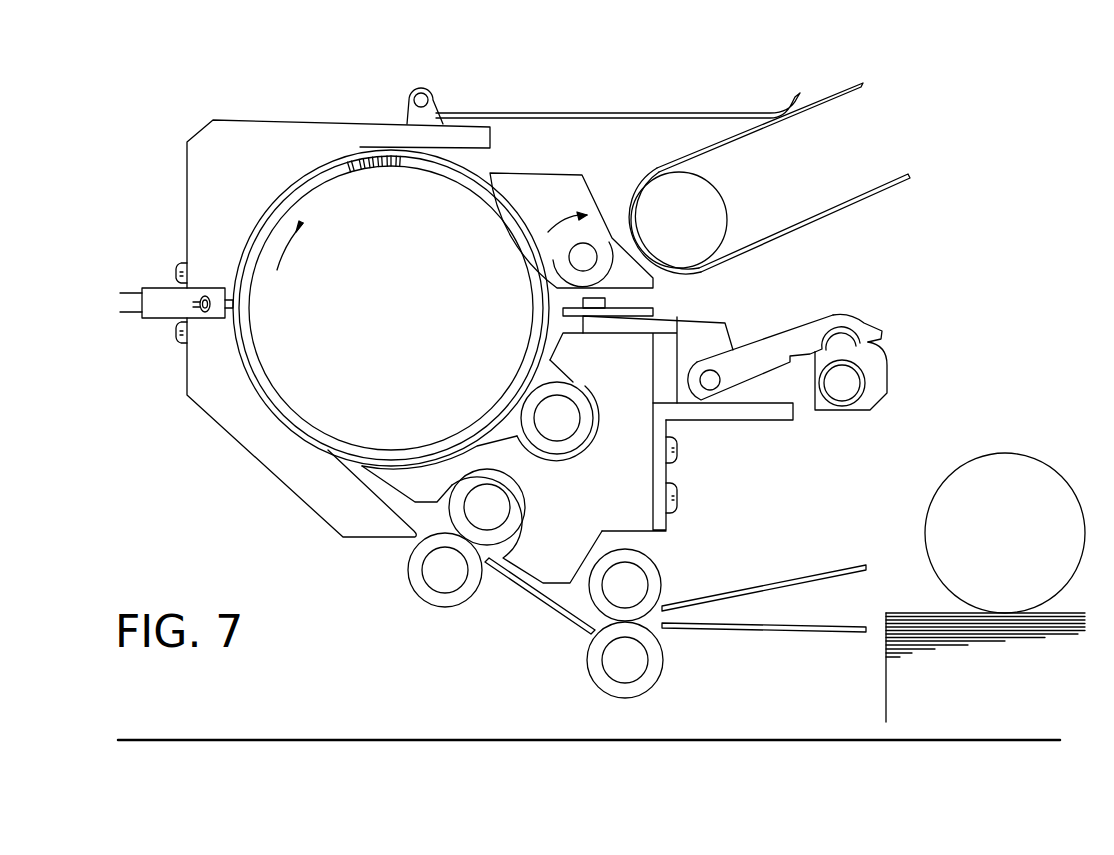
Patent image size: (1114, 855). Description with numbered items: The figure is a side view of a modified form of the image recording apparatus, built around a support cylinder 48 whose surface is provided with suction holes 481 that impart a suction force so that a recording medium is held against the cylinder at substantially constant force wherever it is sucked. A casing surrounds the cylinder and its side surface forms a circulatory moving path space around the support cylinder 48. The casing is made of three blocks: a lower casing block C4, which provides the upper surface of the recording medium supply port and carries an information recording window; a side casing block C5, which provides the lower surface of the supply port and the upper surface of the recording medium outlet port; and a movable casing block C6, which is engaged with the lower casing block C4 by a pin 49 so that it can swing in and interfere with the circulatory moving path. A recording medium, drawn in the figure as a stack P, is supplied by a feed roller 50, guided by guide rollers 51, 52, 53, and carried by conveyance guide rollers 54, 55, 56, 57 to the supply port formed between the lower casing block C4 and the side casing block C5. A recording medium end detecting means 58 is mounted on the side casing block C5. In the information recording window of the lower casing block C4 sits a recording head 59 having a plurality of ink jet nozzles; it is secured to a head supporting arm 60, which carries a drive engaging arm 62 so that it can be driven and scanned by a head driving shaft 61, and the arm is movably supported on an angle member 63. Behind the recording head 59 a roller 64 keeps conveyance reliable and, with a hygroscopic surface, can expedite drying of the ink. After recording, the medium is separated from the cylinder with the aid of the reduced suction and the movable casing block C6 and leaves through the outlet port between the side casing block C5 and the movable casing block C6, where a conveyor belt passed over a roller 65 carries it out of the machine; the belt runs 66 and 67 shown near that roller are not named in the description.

The support cylinder 48 is at (490, 191).
The suction holes 481 is at (373, 167).
The pin 49 is at (569, 257).
The feed roller 50 is at (1025, 462).
The guide roller 51 is at (799, 582).
The guide roller 52 is at (794, 631).
The guide roller 53 is at (562, 618).
The conveyance guide roller 54 is at (655, 563).
The conveyance guide roller 55 is at (655, 670).
The conveyance guide roller 56 is at (525, 507).
The conveyance guide roller 57 is at (416, 583).
The recording medium end detecting means 58 is at (163, 294).
The recording head 59 is at (653, 309).
The head supporting arm 60 is at (722, 334).
The head driving shaft 61 is at (843, 403).
The drive engaging arm 62 is at (853, 315).
The angle member 63 is at (757, 415).
The roller 64 is at (572, 390).
The roller 65 is at (718, 207).
The conveyor belt 66 is at (842, 209).
The belt 67 is at (637, 113).
The lower casing block C4 is at (636, 472).
The side casing block C5 is at (216, 418).
The movable casing block C6 is at (534, 184).
The paper stack P is at (890, 684).